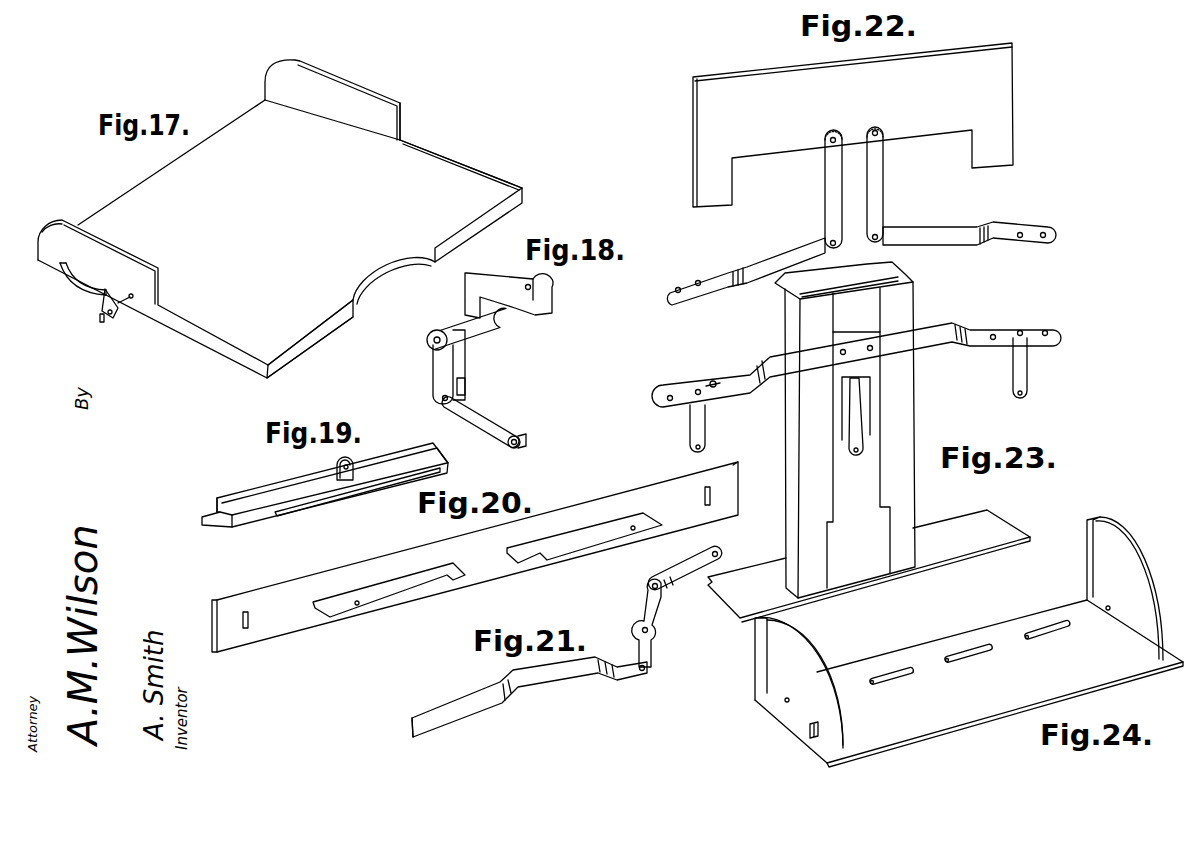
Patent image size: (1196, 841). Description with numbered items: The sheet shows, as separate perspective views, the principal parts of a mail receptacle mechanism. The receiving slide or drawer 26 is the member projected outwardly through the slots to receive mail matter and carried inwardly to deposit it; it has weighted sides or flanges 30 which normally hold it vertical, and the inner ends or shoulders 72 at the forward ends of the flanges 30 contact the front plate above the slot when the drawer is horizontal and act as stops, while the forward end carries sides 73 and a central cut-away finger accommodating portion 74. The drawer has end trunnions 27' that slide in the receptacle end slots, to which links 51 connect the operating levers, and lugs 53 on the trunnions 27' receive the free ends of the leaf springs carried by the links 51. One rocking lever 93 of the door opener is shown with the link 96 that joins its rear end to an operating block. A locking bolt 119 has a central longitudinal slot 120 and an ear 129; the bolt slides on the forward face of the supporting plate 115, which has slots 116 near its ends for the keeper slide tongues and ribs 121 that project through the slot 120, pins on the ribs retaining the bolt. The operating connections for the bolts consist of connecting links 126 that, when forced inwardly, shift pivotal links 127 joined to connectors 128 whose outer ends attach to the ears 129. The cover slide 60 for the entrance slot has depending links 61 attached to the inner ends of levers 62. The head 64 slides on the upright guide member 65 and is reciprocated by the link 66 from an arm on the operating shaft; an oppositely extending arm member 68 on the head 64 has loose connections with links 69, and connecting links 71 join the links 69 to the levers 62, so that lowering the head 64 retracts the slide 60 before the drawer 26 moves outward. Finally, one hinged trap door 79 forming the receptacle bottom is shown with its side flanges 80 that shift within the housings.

In FIG. 17, the receiving slide or drawer 26 is at (280, 239).
In FIG. 17, the weighted sides or flanges 30 is at (393, 124).
In FIG. 17, the shoulders 72 is at (402, 124).
In FIG. 17, the sides 73 is at (467, 172).
In FIG. 17, the central cut-away finger accommodating portion 74 is at (367, 278).
In FIG. 17, the links 51 is at (73, 285).
In FIG. 17, the lugs 53 is at (103, 290).
In FIG. 17, the end trunnions 27' is at (94, 335).
In FIG. 18, the rocking levers 93 is at (440, 365).
In FIG. 18, the links 96 is at (495, 422).
In FIG. 19, the locking bolts 119 is at (260, 517).
In FIG. 19, the central longitudinal slots 120 is at (367, 487).
In FIG. 19, the ears 129 is at (334, 468).
In FIG. 20, the supporting plate 115 is at (475, 557).
In FIG. 20, the slots 116 is at (247, 630).
In FIG. 20, the ribs 121 is at (418, 585).
In FIG. 21, the connecting links 126 is at (567, 677).
In FIG. 21, the pivotal links 127 is at (653, 616).
In FIG. 21, the connectors 128 is at (707, 547).
In FIG. 22, the cover slide 60 is at (853, 125).
In FIG. 22, the depending links 61 is at (837, 193).
In FIG. 22, the levers 62 is at (933, 233).
In FIG. 23, the upright guide member 65 is at (910, 403).
In FIG. 23, the link 66 is at (845, 455).
In FIG. 23, the head 64 is at (840, 373).
In FIG. 23, the oppositely extending arm member 68 is at (765, 360).
In FIG. 23, the links 69 is at (673, 387).
In FIG. 23, the connecting links 71 is at (690, 427).
In FIG. 24, the trap doors 79 is at (969, 683).
In FIG. 24, the side flanges 80 is at (959, 632).